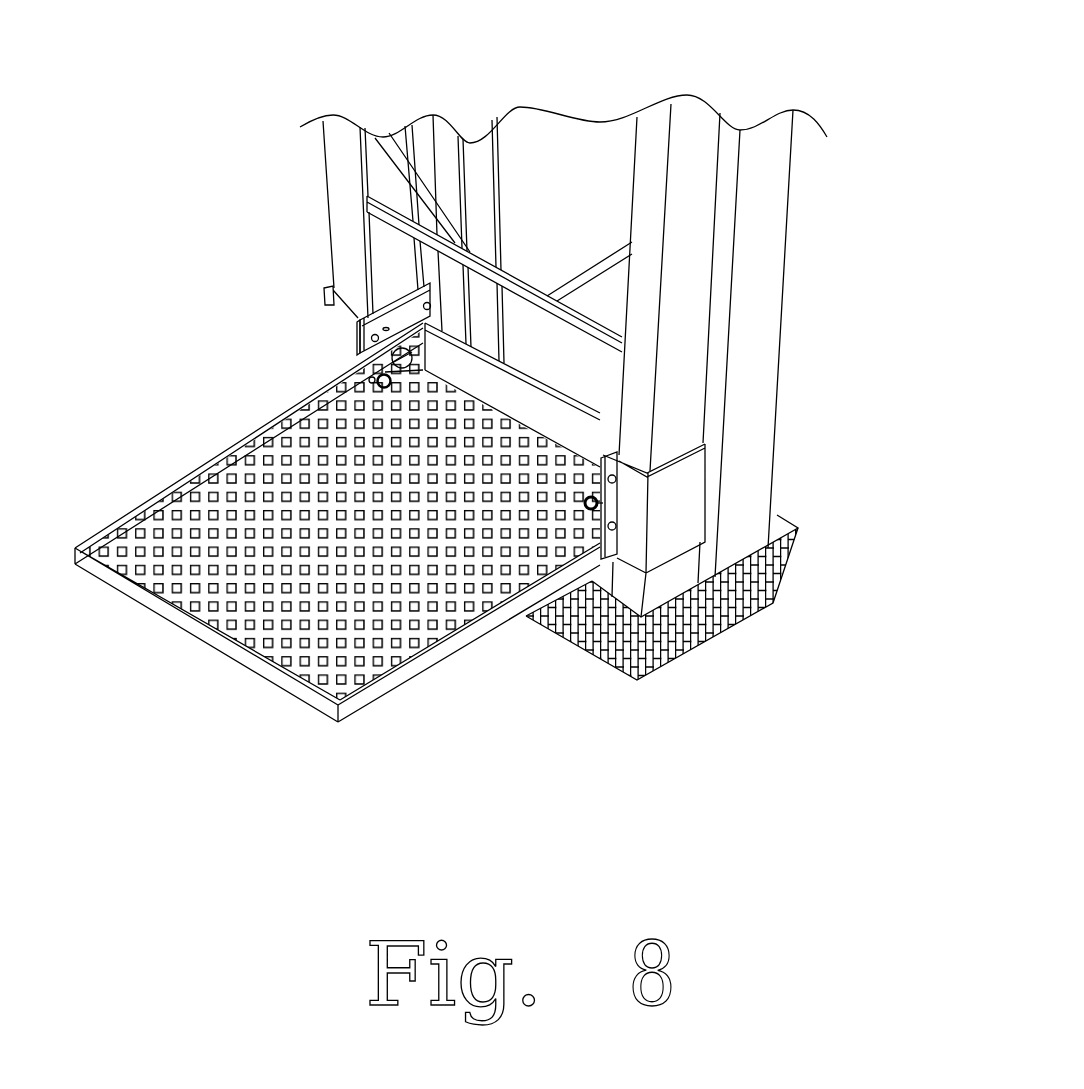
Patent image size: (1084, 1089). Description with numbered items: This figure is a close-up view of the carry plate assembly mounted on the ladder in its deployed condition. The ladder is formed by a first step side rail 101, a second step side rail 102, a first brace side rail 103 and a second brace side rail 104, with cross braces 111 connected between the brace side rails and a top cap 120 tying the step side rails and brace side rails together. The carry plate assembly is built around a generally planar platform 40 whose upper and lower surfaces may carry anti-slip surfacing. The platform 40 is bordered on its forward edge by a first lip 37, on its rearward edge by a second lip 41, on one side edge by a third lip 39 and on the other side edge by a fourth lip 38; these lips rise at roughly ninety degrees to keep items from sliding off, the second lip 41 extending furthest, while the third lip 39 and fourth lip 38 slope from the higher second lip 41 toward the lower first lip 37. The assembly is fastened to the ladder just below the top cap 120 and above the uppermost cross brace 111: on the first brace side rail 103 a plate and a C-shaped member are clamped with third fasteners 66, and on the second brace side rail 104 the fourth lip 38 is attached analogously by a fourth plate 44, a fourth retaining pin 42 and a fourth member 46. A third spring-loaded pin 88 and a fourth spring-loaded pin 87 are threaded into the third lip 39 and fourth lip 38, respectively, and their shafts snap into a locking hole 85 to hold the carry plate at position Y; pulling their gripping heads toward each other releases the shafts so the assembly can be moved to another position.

The first lip 37 is at (184, 626).
The fourth lip 38 is at (222, 477).
The third lip 39 is at (472, 635).
The platform 40 is at (305, 567).
The second lip 41 is at (518, 402).
The fourth retaining pin 42 is at (457, 255).
The fourth plate 44 is at (377, 268).
The fourth member 46 is at (333, 313).
The third fasteners 66 is at (608, 558).
The locking hole 85 is at (357, 324).
The fourth spring-loaded pin 87 is at (370, 383).
The third spring-loaded pin 88 is at (598, 532).
The first step side rail 101 is at (750, 250).
The second step side rail 102 is at (472, 167).
The first brace side rail 103 is at (693, 207).
The second brace side rail 104 is at (336, 163).
The cross braces 111 is at (622, 340).
The top cap 120 is at (702, 623).